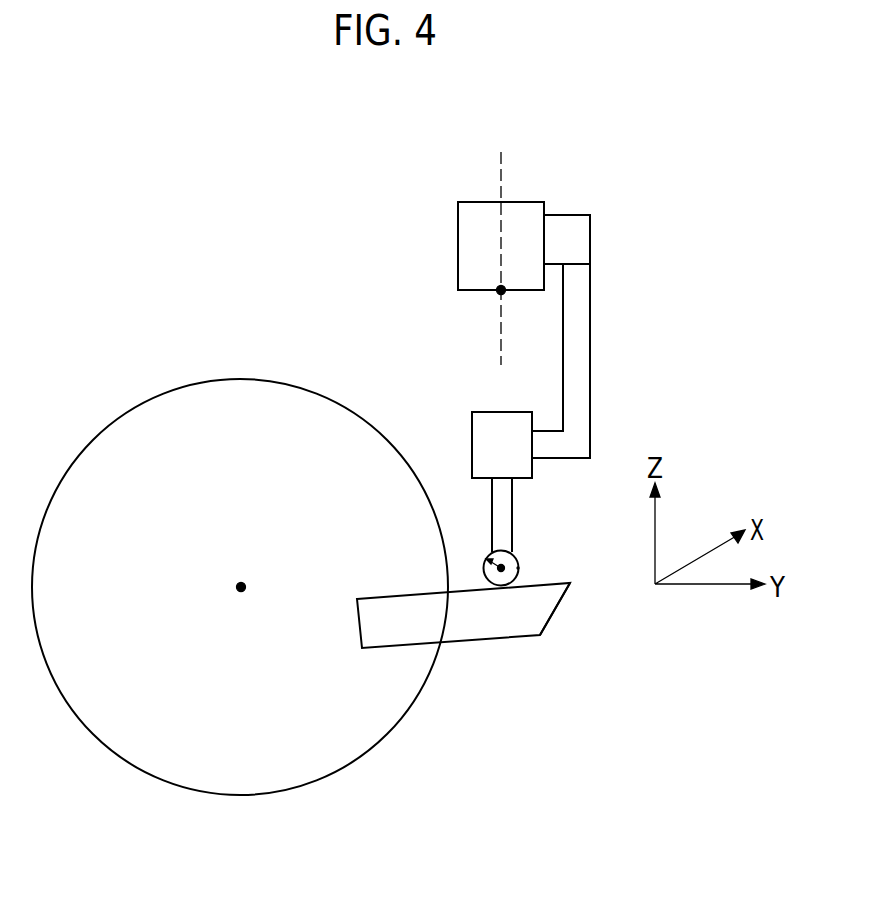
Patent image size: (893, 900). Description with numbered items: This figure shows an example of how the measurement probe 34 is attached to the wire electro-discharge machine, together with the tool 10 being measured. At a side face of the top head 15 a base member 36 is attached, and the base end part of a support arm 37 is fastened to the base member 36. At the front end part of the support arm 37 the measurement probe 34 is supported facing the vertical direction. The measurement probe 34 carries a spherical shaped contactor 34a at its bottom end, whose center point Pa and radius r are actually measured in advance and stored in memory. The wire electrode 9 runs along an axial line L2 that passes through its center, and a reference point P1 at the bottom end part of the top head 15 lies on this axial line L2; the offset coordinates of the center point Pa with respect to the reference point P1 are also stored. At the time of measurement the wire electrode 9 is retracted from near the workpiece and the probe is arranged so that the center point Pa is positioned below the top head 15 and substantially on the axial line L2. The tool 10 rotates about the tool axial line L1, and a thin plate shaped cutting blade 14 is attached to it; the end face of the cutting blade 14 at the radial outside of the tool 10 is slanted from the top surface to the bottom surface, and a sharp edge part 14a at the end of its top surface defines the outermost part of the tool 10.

The tool 10 is at (118, 417).
The cutting blade 14 is at (483, 638).
The edge part 14a is at (571, 584).
The top head 15 is at (458, 235).
The measurement probe 34 is at (448, 413).
The contactor 34a is at (517, 553).
The base member 36 is at (590, 241).
The support arm 37 is at (590, 336).
The wire electrode 9 is at (501, 328).
The reference point P1 is at (501, 290).
The center point Pa is at (518, 568).
The tool axial line L1 is at (241, 587).
The axial line L2 is at (499, 244).
The radius r is at (485, 572).